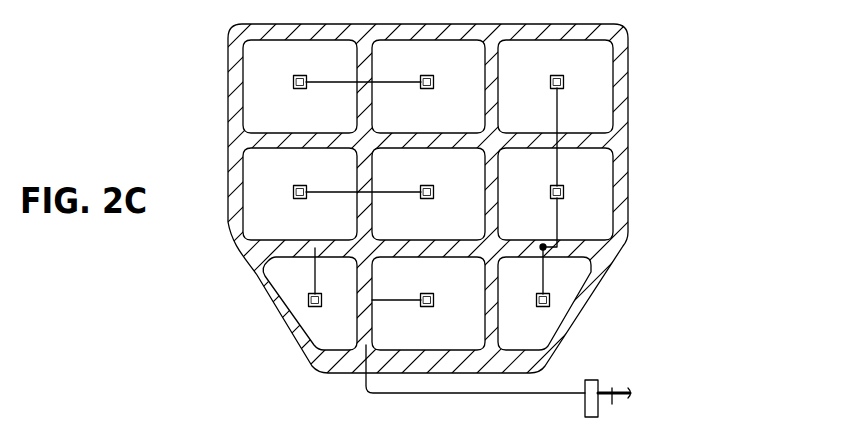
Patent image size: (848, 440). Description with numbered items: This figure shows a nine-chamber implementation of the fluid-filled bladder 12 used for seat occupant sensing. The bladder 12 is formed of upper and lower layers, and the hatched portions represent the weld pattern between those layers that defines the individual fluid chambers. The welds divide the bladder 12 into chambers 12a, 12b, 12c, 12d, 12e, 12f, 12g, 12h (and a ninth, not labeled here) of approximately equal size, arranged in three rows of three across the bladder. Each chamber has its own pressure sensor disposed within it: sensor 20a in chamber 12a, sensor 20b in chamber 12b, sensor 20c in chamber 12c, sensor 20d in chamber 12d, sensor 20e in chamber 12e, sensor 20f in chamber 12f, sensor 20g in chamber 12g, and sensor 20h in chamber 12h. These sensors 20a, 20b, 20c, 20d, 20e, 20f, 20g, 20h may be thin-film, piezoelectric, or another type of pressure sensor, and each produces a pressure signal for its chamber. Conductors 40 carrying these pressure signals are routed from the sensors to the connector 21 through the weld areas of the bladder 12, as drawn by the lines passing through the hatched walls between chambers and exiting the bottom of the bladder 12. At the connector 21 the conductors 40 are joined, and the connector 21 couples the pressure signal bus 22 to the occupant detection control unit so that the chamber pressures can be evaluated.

The fluid-filled bladder 12 is at (712, 231).
The fluid chamber 12a is at (602, 63).
The fluid chamber 12b is at (392, 56).
The fluid chamber 12c is at (257, 67).
The fluid chamber 12d is at (257, 162).
The fluid chamber 12e is at (520, 164).
The fluid chamber 12f is at (600, 206).
The fluid chamber 12g is at (278, 285).
The fluid chamber 12h is at (428, 342).
The pressure sensor 20a is at (550, 84).
The pressure sensor 20b is at (435, 82).
The pressure sensor 20c is at (293, 82).
The pressure sensor 20d is at (293, 192).
The pressure sensor 20e is at (435, 192).
The pressure sensor 20f is at (550, 194).
The pressure sensor 20g is at (308, 300).
The pressure sensor 20h is at (437, 300).
The conductors 40 is at (493, 400).
The connector 21 is at (588, 418).
The pressure signal bus 22 is at (615, 385).